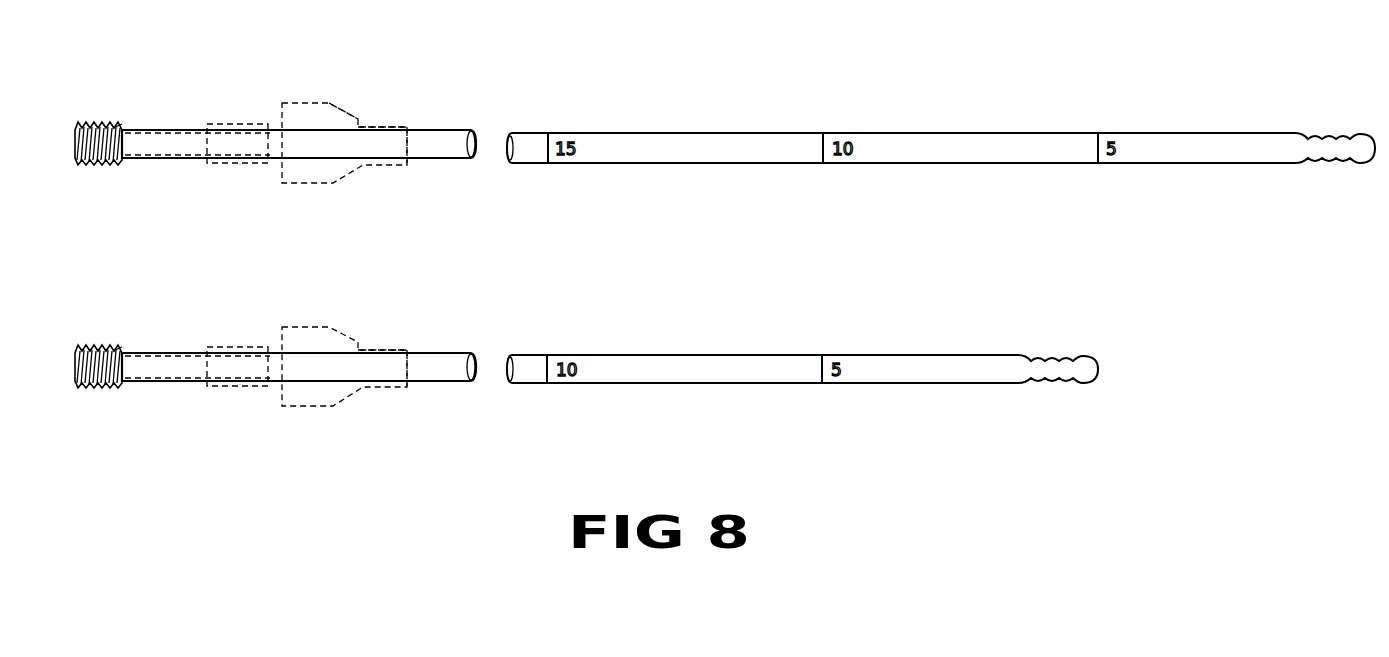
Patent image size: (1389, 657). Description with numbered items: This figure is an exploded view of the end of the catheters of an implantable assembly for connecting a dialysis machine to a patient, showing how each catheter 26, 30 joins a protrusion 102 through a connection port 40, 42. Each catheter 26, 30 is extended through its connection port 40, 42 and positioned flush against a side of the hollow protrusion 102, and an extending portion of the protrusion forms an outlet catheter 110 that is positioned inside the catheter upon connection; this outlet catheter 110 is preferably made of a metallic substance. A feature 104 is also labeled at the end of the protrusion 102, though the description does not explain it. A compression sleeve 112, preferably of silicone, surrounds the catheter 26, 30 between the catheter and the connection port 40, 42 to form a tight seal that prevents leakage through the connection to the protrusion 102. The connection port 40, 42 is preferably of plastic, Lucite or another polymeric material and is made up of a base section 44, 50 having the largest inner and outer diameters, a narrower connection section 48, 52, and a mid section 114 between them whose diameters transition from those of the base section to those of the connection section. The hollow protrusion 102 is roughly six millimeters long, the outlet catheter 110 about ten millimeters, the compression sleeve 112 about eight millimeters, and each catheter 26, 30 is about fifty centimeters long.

The catheter 26 is at (448, 148).
The catheter 30 is at (447, 373).
The connection port 40 is at (303, 92).
The connection port 42 is at (303, 312).
The base section 44 is at (329, 103).
The connection section 48 is at (393, 125).
The base section 50 is at (357, 290).
The connection section 52 is at (393, 348).
The protrusion 102 is at (104, 118).
The thread shoulder 104 is at (113, 127).
The outlet catheter 110 is at (179, 146).
The compression sleeve 112 is at (243, 165).
The mid section 114 is at (360, 118).